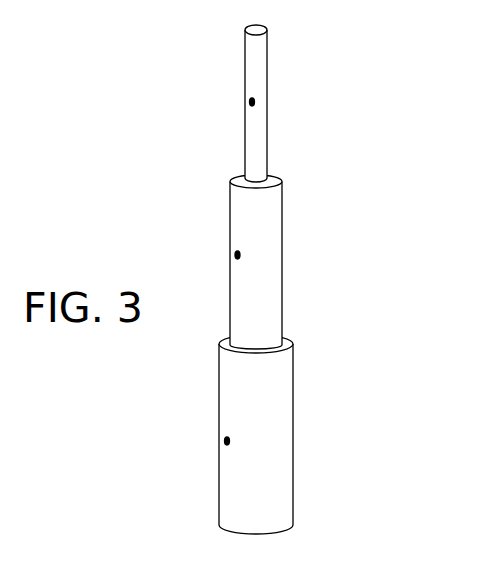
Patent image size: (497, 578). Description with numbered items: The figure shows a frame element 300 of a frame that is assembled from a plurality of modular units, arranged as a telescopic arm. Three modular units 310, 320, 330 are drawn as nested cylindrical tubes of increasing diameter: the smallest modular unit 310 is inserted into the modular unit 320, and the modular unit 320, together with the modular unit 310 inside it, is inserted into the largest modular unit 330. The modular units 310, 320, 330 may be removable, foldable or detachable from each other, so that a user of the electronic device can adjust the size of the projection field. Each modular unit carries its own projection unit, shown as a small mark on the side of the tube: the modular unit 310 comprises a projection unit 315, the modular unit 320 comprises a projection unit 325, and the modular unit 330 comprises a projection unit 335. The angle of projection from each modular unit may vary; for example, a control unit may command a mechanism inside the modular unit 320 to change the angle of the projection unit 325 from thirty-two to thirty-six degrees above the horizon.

The telescoping tube assembly 300 is at (392, 127).
The modular unit 310 is at (267, 73).
The projection unit 315 is at (249, 102).
The modular unit 320 is at (282, 222).
The projection unit 325 is at (235, 255).
The modular unit 330 is at (293, 435).
The projection unit 335 is at (225, 441).